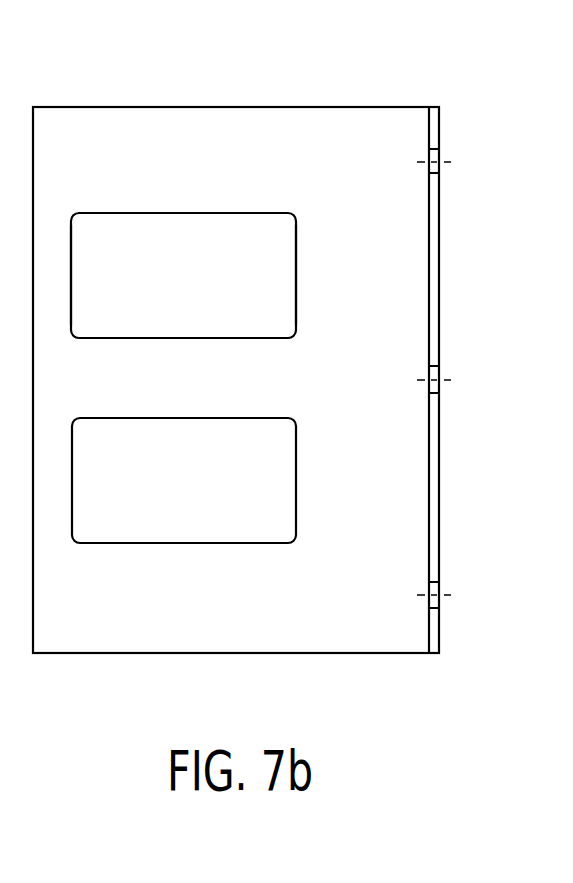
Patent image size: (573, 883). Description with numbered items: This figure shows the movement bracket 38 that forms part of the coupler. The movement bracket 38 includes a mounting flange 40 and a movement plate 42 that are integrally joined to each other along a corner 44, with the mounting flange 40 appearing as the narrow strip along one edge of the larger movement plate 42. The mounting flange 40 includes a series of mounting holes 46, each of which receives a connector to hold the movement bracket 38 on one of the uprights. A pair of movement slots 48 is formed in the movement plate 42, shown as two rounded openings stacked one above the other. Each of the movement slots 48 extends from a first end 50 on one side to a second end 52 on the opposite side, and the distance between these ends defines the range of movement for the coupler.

The movement bracket 38 is at (231, 94).
The mounting flange 40 is at (429, 238).
The movement plate 42 is at (380, 135).
The corner 44 is at (567, 308).
The mounting holes 46 is at (429, 366).
The movement slots 48 is at (183, 213).
The first end 50 is at (72, 277).
The second end 52 is at (296, 273).